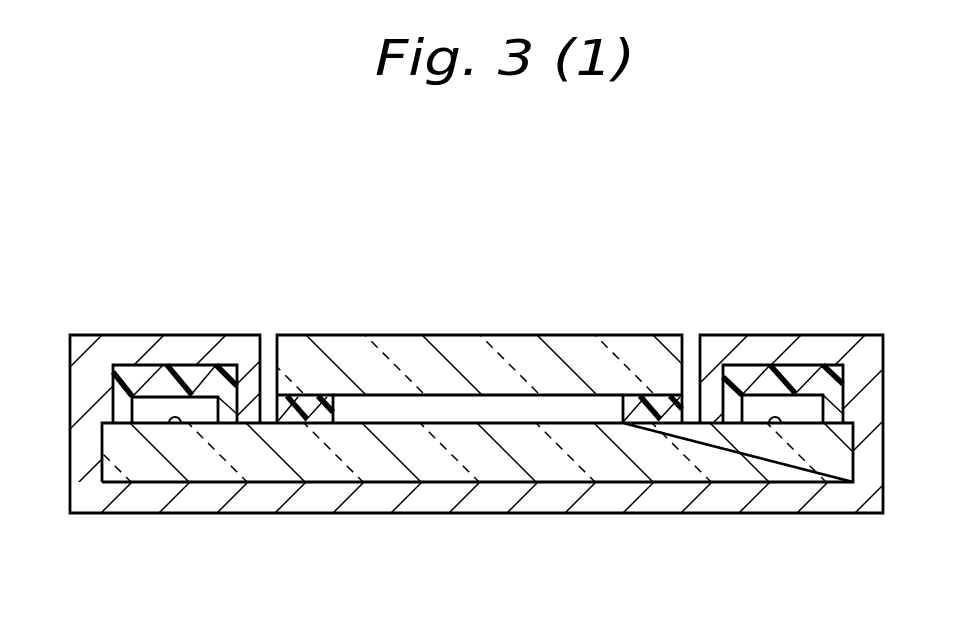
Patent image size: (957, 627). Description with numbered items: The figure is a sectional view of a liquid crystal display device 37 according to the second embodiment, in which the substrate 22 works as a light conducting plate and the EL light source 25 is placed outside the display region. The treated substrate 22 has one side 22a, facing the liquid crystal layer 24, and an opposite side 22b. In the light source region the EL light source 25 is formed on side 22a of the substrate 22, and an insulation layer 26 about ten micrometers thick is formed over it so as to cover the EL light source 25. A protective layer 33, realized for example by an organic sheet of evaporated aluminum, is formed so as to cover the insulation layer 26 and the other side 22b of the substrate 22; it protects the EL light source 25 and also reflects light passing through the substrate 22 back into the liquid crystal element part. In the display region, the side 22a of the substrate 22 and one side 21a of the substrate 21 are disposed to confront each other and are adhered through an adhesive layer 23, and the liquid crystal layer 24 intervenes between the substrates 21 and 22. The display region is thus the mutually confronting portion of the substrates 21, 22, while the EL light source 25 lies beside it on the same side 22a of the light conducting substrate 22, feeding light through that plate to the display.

The liquid crystal display device 37 is at (473, 196).
The substrate 21 is at (445, 345).
The one side of the substrate 21a is at (385, 397).
The substrate 22 is at (417, 452).
The one side of the substrate 22a is at (173, 426).
The other side of the substrate 22b is at (323, 484).
The adhesive layer 23 is at (303, 395).
The liquid crystal layer 24 is at (517, 405).
The EL light source 25 is at (193, 410).
The insulation layer 26 is at (123, 378).
The protective layer 33 is at (599, 492).